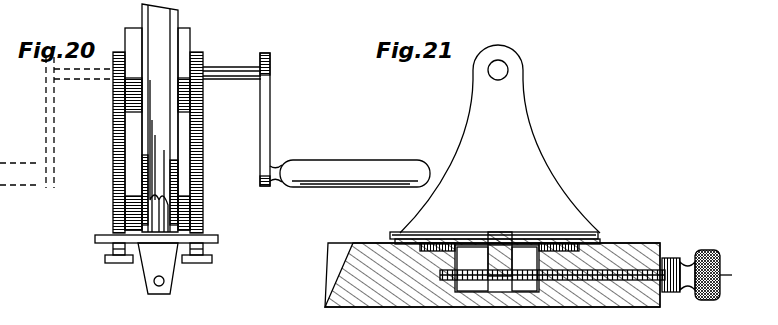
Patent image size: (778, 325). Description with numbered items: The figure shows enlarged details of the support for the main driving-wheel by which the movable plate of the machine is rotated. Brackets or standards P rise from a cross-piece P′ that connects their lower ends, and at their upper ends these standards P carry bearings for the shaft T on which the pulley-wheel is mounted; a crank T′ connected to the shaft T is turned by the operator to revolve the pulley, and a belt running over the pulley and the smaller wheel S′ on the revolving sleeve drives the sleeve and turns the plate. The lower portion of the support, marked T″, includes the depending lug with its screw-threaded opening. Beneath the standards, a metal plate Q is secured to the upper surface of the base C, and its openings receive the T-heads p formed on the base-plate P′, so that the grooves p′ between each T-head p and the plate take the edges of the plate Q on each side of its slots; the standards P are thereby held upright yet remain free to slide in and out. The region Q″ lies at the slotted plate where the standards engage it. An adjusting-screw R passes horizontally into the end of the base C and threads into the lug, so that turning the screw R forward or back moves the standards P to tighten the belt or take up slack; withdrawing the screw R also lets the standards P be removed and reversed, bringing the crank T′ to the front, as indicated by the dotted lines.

In FIG. 20, the shaft T is at (130, 118).
In FIG. 20, the brackets or standards P is at (156, 130).
In FIG. 21, the brackets or standards P is at (500, 139).
In FIG. 20, the smaller wheel S' is at (160, 118).
In FIG. 20, the crank T' is at (345, 120).
In FIG. 20, the cross-piece P' is at (170, 235).
In FIG. 20, the grooves p' is at (155, 264).
In FIG. 21, the grooves p' is at (495, 228).
In FIG. 20, the T-heads p is at (165, 271).
In FIG. 20, the bracket T'' is at (158, 268).
In FIG. 21, the base C is at (492, 275).
In FIG. 21, the inner block Q'' is at (472, 269).
In FIG. 21, the metal plate Q is at (552, 250).
In FIG. 21, the adjusting-screw R is at (615, 235).